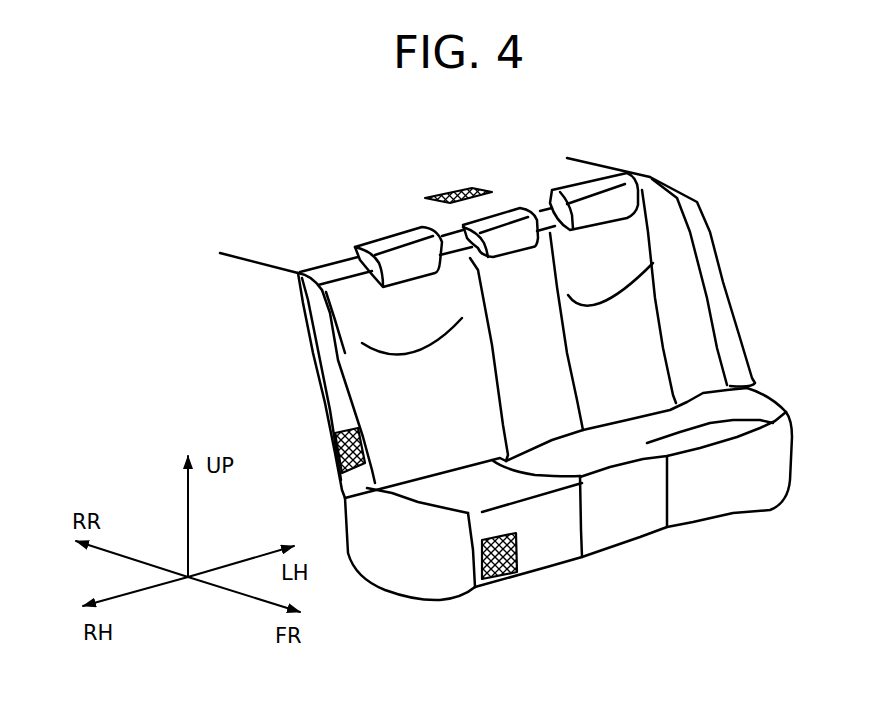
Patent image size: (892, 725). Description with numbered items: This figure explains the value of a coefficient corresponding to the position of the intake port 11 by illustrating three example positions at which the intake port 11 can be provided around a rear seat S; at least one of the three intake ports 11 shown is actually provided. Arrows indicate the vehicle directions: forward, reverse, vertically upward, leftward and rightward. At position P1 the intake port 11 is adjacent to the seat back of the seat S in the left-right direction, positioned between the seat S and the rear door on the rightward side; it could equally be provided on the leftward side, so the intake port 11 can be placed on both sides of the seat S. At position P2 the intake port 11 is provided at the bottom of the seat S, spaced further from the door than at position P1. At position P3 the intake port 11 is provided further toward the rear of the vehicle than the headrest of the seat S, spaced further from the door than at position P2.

The intake port 11 is at (442, 374).
The position P1 is at (346, 426).
The position P2 is at (520, 551).
The position P3 is at (445, 185).
The seat S is at (723, 224).